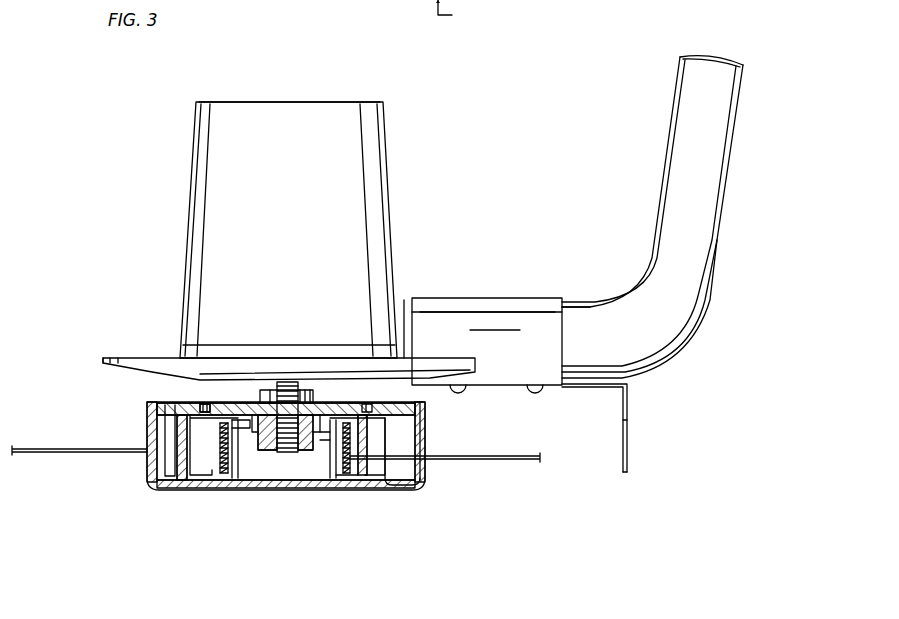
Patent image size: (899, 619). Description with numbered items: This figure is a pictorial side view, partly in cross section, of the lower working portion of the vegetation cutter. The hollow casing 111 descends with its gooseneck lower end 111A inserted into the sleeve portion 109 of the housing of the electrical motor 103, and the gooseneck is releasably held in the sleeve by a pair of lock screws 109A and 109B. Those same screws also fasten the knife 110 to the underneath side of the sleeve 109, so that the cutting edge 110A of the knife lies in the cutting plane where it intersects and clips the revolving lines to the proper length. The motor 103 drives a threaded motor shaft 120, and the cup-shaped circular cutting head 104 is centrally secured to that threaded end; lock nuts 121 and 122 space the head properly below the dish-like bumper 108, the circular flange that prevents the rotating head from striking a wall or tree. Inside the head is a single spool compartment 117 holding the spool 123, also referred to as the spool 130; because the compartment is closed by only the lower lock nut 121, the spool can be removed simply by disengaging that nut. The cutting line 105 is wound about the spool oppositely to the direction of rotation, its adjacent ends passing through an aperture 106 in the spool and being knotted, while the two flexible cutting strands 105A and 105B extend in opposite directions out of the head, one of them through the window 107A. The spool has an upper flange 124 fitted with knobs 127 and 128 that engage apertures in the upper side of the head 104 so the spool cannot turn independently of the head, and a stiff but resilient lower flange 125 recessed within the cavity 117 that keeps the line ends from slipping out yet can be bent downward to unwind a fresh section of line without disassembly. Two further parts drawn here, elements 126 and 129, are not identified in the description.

The electrical motor 103 is at (385, 142).
The circular cutting head 104 is at (150, 422).
The cutting line 105 is at (210, 475).
The flexible cutting strand 105A is at (70, 458).
The flexible cutting strand 105B is at (537, 462).
The aperture 106 is at (250, 436).
The window 107A is at (567, 9).
The bumper 108 is at (128, 356).
The sleeve portion 109 is at (490, 298).
The lock screw 109A is at (462, 392).
The lock screw 109B is at (540, 392).
The knife 110 is at (629, 393).
The cutting edge 110A is at (634, 444).
The hollow casing 111 is at (736, 140).
The gooseneck lower end 111A is at (592, 303).
The spool compartment 117 is at (266, 502).
The motor shaft 120 is at (288, 454).
The lower lock nut 121 is at (312, 452).
The lock nut 122 is at (318, 401).
The spool 123 is at (358, 488).
The upper flange 124 is at (425, 455).
The lower flange 125 is at (385, 490).
The inner cup 126 is at (235, 401).
The knob 127 is at (370, 401).
The knob 128 is at (208, 403).
The cylinder 129 is at (426, 438).
The spool 130 is at (328, 470).